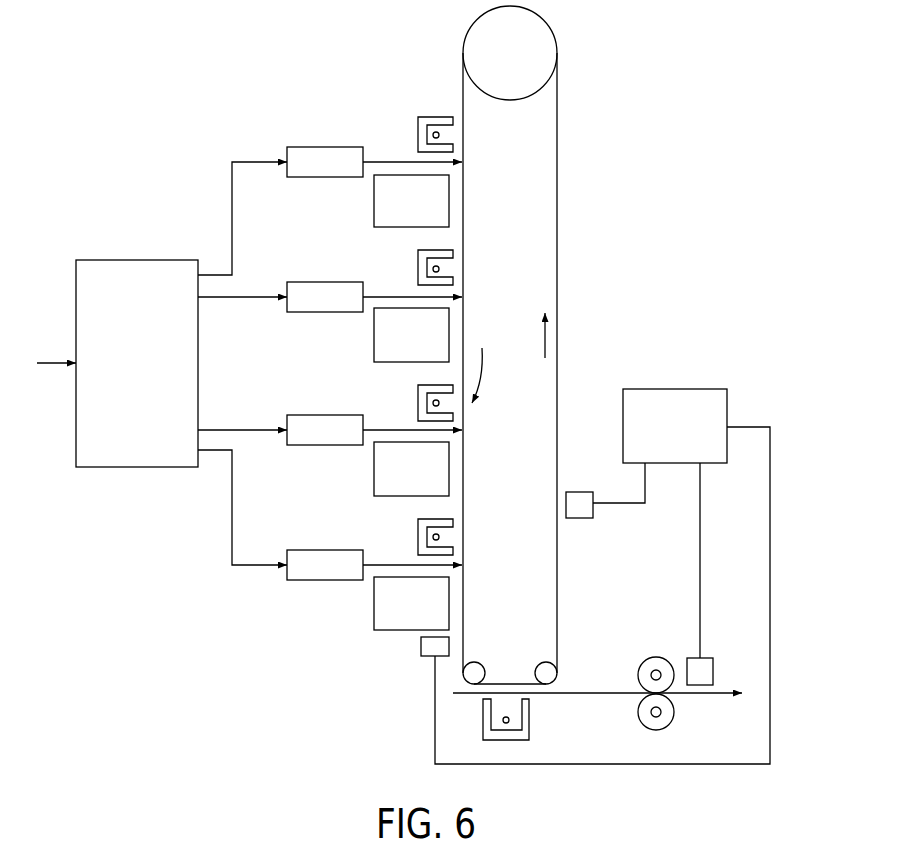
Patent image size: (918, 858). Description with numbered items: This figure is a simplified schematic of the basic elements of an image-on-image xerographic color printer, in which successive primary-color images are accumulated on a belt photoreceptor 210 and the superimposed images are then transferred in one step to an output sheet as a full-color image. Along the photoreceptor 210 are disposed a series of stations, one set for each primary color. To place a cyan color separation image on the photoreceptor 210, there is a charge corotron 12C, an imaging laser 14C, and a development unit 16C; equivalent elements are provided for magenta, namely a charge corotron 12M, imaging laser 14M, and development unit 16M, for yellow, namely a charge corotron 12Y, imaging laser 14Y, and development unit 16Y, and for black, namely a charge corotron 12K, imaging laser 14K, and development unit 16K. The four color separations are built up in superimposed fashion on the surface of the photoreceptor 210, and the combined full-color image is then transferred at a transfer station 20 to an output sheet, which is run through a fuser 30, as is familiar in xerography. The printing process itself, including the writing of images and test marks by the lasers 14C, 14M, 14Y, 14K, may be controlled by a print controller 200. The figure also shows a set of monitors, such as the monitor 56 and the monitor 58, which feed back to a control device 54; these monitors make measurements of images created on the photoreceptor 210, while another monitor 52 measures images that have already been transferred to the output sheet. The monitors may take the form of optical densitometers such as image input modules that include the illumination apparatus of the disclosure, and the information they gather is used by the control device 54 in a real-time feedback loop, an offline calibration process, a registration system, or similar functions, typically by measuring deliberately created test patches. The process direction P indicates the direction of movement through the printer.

The print controller 200 is at (157, 260).
The belt photoreceptor 210 is at (557, 263).
The process direction P is at (597, 508).
The imaging laser 14C is at (300, 147).
The charge corotron 12C is at (418, 128).
The development unit 16C is at (374, 192).
The imaging laser 14M is at (298, 282).
The charge corotron 12M is at (418, 262).
The development unit 16M is at (374, 327).
The imaging laser 14Y is at (298, 415).
The charge corotron 12Y is at (418, 396).
The development unit 16Y is at (374, 458).
The imaging laser 14K is at (298, 550).
The charge corotron 12K is at (418, 532).
The development unit 16K is at (374, 598).
The monitor 58 is at (421, 647).
The transfer station 20 is at (547, 705).
The control device 54 is at (713, 389).
The monitor 56 is at (585, 492).
The monitor 52 is at (704, 658).
The fuser 30 is at (645, 656).